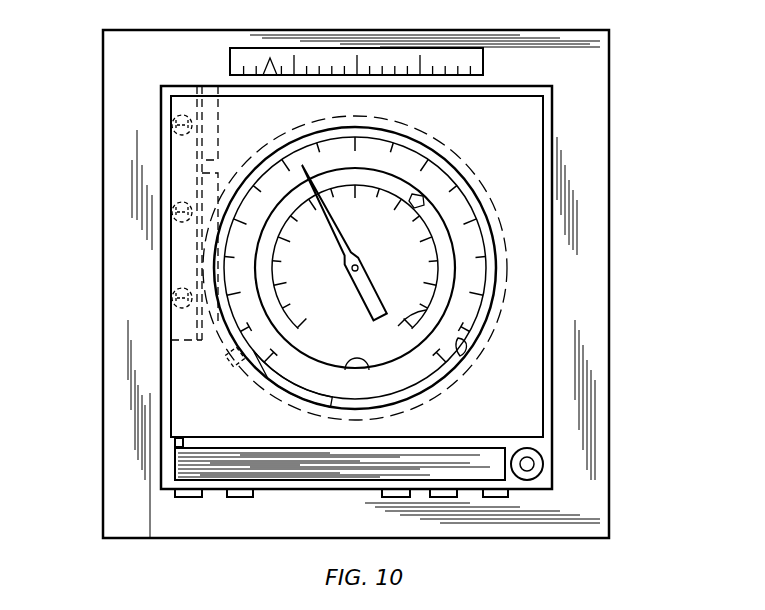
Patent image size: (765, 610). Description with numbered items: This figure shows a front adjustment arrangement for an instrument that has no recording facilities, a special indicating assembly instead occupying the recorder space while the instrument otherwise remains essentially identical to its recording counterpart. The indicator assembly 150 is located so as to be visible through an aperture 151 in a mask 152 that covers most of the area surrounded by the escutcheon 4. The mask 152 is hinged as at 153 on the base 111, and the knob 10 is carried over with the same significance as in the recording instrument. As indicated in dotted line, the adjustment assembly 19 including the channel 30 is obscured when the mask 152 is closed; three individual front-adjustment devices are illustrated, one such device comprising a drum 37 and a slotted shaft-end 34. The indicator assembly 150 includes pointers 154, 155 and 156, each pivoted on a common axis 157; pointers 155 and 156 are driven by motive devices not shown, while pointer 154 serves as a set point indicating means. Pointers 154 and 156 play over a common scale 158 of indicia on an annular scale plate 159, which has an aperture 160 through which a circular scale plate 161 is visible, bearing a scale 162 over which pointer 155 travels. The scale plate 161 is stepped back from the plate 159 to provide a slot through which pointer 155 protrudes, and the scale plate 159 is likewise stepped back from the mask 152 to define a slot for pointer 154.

The escutcheon 4 is at (103, 95).
The reference element carried over from the recording instrument 10 is at (545, 464).
The adjustment assembly 19 is at (187, 177).
The channel 30 is at (187, 341).
The slotted shaft-end 34 is at (172, 118).
The drum 37 is at (190, 141).
The base 111 is at (290, 462).
The indicator assembly 150 is at (462, 162).
The aperture 151 is at (290, 393).
The mask 152 is at (192, 398).
The hinge 153 is at (176, 442).
The set point pointer 154 is at (246, 357).
The pointer 155 is at (425, 200).
The pointer 156 is at (330, 240).
The common axis 157 is at (358, 268).
The common scale 158 is at (466, 352).
The annular scale plate 159 is at (510, 316).
The aperture 160 is at (365, 370).
The circular scale plate 161 is at (345, 336).
The scale 162 is at (412, 318).